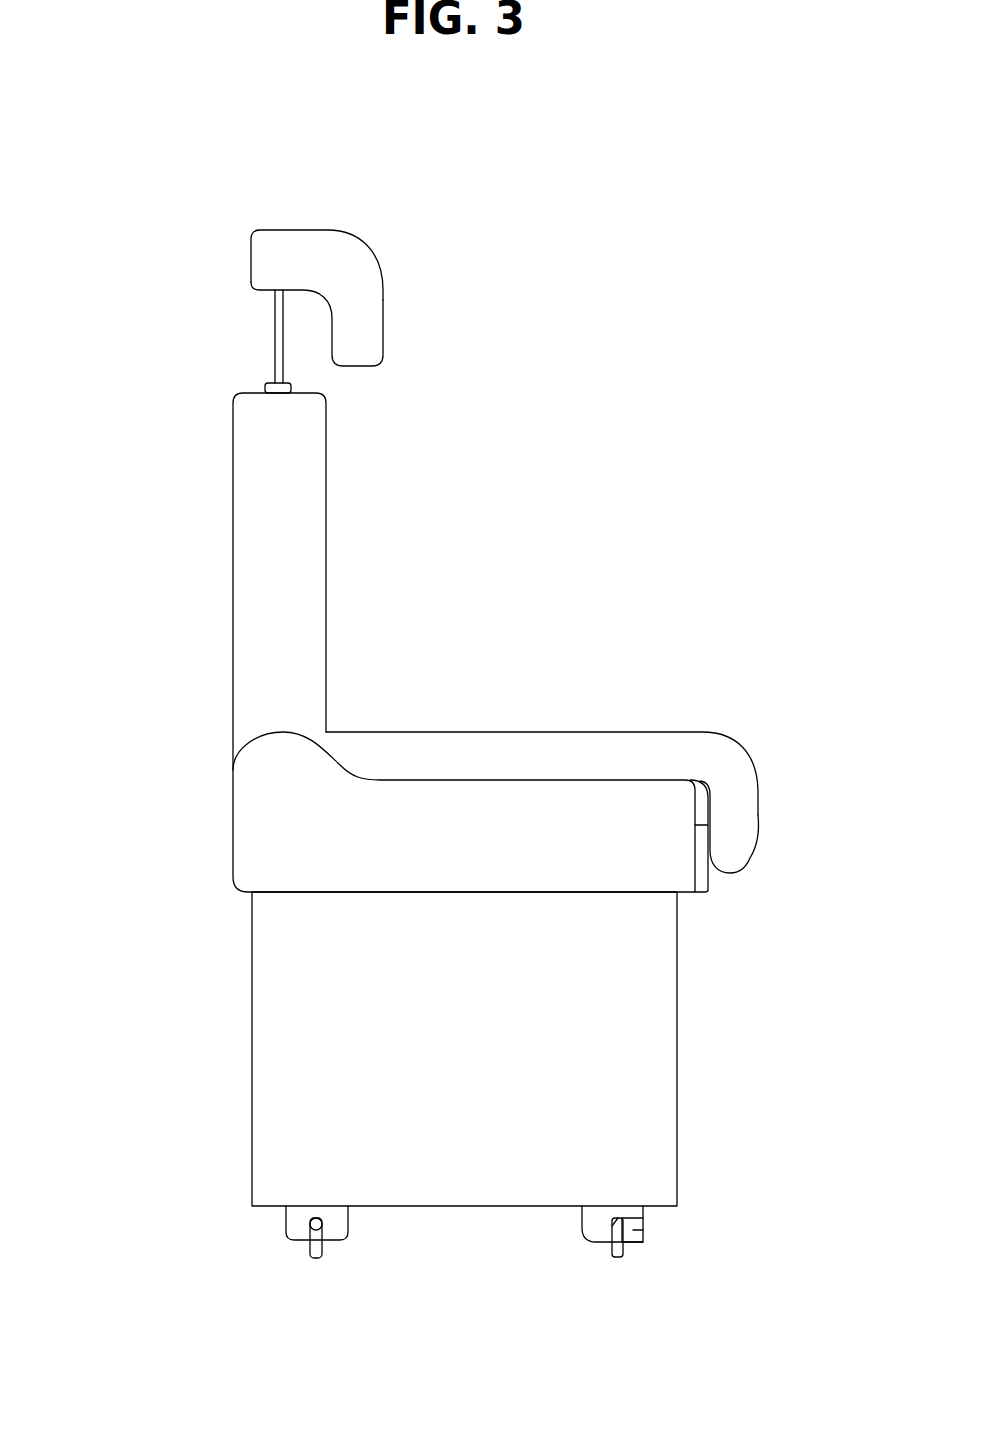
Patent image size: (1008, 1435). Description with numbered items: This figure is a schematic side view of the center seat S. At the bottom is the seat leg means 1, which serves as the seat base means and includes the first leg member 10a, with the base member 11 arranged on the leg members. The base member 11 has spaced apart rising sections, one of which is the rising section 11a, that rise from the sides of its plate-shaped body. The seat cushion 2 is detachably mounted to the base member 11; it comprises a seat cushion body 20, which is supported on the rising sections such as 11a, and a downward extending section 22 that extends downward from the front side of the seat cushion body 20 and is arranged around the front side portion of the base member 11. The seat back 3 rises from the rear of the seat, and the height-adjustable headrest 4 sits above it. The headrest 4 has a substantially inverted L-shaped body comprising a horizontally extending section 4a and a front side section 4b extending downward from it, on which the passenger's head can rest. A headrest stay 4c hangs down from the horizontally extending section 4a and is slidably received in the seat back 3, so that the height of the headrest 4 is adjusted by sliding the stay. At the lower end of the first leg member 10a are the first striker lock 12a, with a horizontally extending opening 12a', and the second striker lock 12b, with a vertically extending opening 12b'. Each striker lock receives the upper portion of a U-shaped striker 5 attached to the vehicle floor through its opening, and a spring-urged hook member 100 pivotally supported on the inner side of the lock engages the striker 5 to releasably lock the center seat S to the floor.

The center seat S is at (388, 635).
The seat leg means 1 is at (448, 1117).
The seat cushion 2 is at (460, 735).
The seat back 3 is at (307, 502).
The headrest 4 is at (368, 255).
The horizontally extending section 4a is at (288, 230).
The front side section 4b is at (383, 342).
The headrest stay 4c is at (275, 341).
The striker 5 is at (324, 1252).
The first leg member 10a is at (638, 1050).
The base member 11 is at (385, 785).
The rising section 11a is at (253, 825).
The first striker lock 12a is at (577, 1274).
The horizontally extending opening 12a' is at (659, 1277).
The second striker lock 12b is at (280, 1264).
The vertically extending opening 12b' is at (367, 1270).
The seat cushion body 20 is at (592, 733).
The downward extending section 22 is at (758, 815).
The hook member 100 is at (638, 1225).